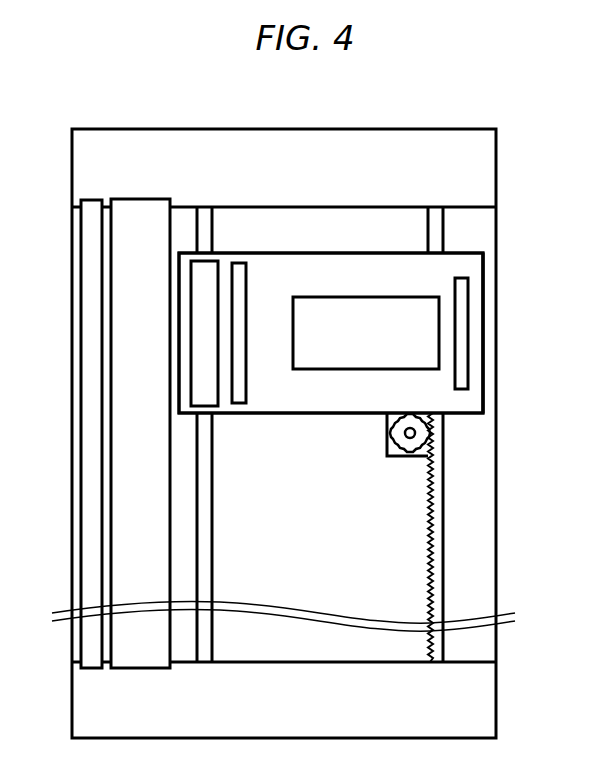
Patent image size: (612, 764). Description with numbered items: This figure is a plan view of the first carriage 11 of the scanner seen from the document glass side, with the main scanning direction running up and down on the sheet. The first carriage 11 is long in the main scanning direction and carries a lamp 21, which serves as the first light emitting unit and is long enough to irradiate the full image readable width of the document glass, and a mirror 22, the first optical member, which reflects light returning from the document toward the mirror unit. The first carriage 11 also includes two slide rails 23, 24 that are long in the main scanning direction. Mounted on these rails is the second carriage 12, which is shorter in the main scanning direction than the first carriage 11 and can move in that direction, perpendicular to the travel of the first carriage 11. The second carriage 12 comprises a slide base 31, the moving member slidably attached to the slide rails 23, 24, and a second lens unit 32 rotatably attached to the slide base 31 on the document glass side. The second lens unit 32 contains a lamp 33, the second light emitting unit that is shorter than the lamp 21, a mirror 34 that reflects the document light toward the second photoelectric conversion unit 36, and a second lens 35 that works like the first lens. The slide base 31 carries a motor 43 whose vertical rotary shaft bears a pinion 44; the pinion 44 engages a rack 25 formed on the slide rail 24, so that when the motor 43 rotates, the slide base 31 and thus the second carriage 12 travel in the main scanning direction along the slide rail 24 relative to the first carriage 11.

The first carriage 11 is at (430, 138).
The second carriage 12 is at (483, 253).
The lamp 21 is at (90, 244).
The mirror 22 is at (142, 208).
The slide rail 23 is at (202, 527).
The slide rail 24 is at (445, 533).
The rack 25 is at (428, 557).
The slide base 31 is at (483, 400).
The second lens unit 32 is at (331, 333).
The lamp 33 is at (240, 272).
The mirror 34 is at (212, 270).
The second lens 35 is at (320, 312).
The second photoelectric conversion unit 36 is at (462, 301).
The motor 43 is at (385, 457).
The pinion 44 is at (425, 457).